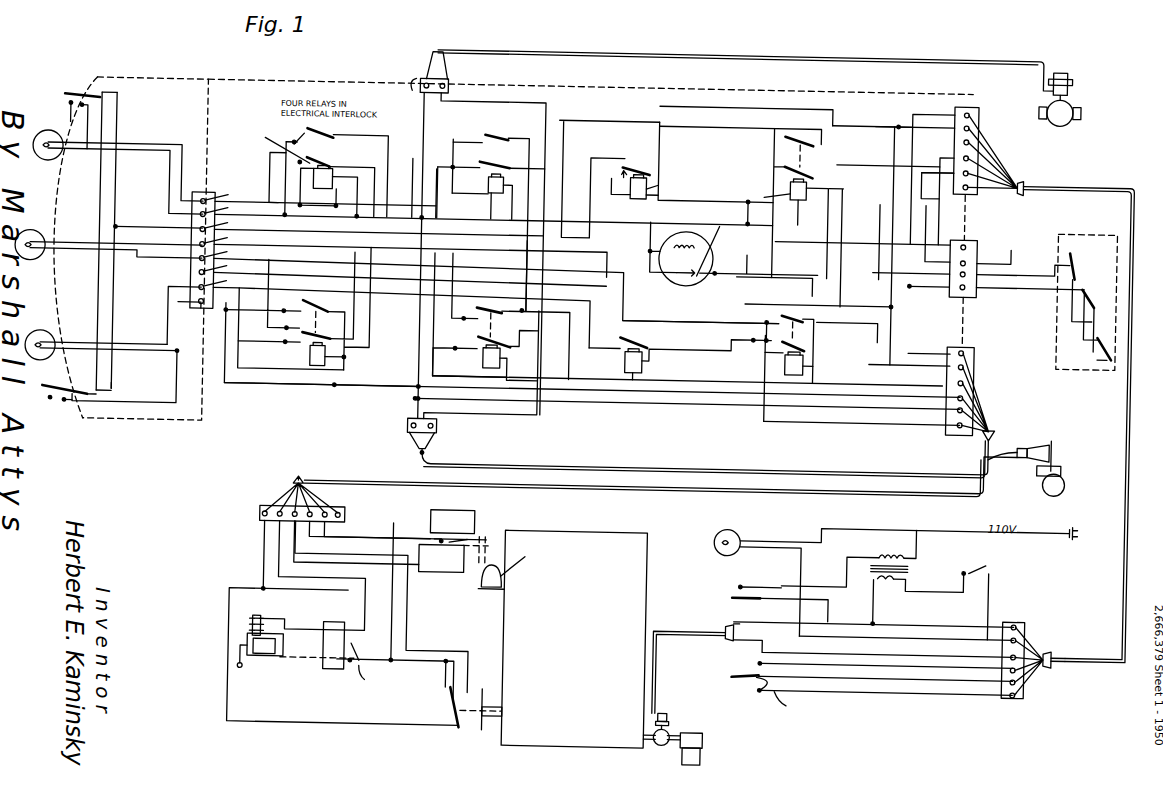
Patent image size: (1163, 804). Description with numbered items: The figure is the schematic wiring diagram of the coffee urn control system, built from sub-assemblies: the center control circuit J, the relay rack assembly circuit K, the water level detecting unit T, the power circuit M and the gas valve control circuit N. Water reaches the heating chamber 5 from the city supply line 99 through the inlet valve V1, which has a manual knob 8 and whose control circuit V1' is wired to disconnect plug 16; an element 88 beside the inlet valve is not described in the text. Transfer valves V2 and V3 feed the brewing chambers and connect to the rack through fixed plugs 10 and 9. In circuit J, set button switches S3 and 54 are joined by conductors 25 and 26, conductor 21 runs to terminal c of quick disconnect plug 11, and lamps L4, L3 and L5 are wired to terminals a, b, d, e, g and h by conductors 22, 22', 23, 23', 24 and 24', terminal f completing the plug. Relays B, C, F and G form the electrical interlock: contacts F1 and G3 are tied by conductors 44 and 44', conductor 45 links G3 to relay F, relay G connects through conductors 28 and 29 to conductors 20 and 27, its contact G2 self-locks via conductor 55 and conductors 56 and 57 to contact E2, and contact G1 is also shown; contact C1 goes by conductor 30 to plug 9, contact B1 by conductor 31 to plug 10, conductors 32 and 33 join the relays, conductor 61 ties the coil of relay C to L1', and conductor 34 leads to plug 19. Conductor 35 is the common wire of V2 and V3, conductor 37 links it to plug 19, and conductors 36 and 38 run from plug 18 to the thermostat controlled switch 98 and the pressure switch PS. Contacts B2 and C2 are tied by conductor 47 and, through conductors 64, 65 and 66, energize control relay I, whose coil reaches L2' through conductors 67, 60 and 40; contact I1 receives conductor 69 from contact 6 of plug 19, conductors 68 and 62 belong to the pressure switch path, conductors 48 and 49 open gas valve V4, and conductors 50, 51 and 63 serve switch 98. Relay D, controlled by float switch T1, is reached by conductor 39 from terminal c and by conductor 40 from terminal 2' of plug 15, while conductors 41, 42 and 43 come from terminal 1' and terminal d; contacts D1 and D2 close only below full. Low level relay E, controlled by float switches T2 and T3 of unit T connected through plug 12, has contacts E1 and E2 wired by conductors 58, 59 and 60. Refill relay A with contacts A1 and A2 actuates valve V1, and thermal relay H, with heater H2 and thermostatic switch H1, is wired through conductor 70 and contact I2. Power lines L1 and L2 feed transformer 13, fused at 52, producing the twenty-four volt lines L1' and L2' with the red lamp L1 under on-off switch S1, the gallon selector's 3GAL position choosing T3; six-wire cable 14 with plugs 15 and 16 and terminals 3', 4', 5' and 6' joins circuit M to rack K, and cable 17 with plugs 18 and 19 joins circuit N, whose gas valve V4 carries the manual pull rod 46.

The water heating chamber 5 is at (572, 628).
The manual control knob 8 is at (668, 738).
The fixed disconnect plug 9 is at (421, 78).
The fixed disconnect plug 10 is at (417, 410).
The quick disconnect plug connection 11 is at (198, 186).
The quick disconnect plug connection 12 is at (978, 224).
The transformer 13 is at (780, 298).
The six wire cable 14 is at (1136, 398).
The disconnect plug 15 is at (972, 86).
The disconnect plug 16 is at (1016, 679).
The six wire cable 17 is at (688, 477).
The disconnect plug 18 is at (356, 506).
The disconnect plug 19 is at (972, 322).
The conductor 20 is at (270, 189).
The conductor 21 is at (156, 220).
The conductor 22 is at (126, 161).
The conductor 22' is at (125, 180).
The conductor 23 is at (116, 234).
The conductor 23' is at (116, 262).
The conductor 24 is at (103, 334).
The conductor 24' is at (120, 351).
The conductor 25 is at (120, 290).
The conductor 26 is at (105, 292).
The common conductor 27 is at (412, 190).
The conductor 28 is at (356, 172).
The conductor 29 is at (341, 192).
The conductor 30 is at (504, 112).
The conductor 31 is at (544, 340).
The conductor 32 is at (438, 158).
The conductor 33 is at (456, 341).
The conductor 34 is at (566, 372).
The conductor 35 is at (428, 111).
The conductor 36 is at (422, 612).
The conductor 37 is at (674, 390).
The conductor 38 is at (458, 576).
The conductor 39 is at (594, 200).
The conductor 40 is at (885, 102).
The conductor 41 is at (937, 188).
The conductor 42 is at (786, 228).
The conductor 43 is at (622, 256).
The conductor 44 is at (323, 333).
The conductor 44' is at (259, 169).
The conductor 45 is at (354, 338).
The manual pull rod 46 is at (254, 640).
The conductor 47 is at (740, 368).
The conductor 48 is at (883, 325).
The conductor 49 is at (738, 317).
The conductor 50 is at (369, 632).
The conductor 51 is at (420, 658).
The fuse 52 is at (988, 550).
The manually operated switch 54 is at (100, 90).
The conductor 55 is at (274, 163).
The conductor 56 is at (413, 163).
The conductor 57 is at (522, 290).
The conductor 58 is at (688, 335).
The conductor 59 is at (874, 281).
The conductor 60 is at (894, 168).
The conductor 61 is at (556, 177).
The conductor 62 is at (384, 518).
The conductor 63 is at (270, 548).
The conductor 64 is at (462, 174).
The conductor 65 is at (532, 128).
The conductor 66 is at (574, 294).
The conductor 67 is at (842, 354).
The conductor 68 is at (428, 519).
The conductor 69 is at (848, 412).
The conductor 70 is at (794, 208).
The water inlet valve 88 is at (720, 748).
The thermostat controlled switch 98 is at (462, 698).
The city water supply line 99 is at (726, 722).
The terminal a is at (325, 202).
The terminal b is at (494, 219).
The terminal c is at (378, 232).
The terminal d is at (411, 257).
The terminal e is at (496, 287).
The terminal f is at (409, 275).
The terminal g is at (401, 327).
The terminal h is at (208, 300).
The refill relay A is at (814, 162).
The contact of refill relay A1 is at (775, 158).
The contact of refill relay A2 is at (775, 132).
The relay B is at (508, 348).
The contact of relay B B1 is at (488, 335).
The contact of relay B B2 is at (486, 300).
The relay C is at (492, 184).
The contact of relay C C1 is at (481, 158).
The contact of relay C C2 is at (489, 131).
The relay D is at (628, 186).
The contact of relay D D1 is at (630, 148).
The contact of relay D D2 is at (622, 164).
The low level relay E is at (632, 350).
The contact of relay E E1 is at (624, 331).
The contact of relay E E2 is at (636, 327).
The relay F is at (316, 350).
The contact of relay F F1 is at (330, 316).
The relay G is at (338, 165).
The contact of relay G G1 is at (270, 134).
The contact of relay G G2 is at (308, 120).
The contact of relay G G3 is at (325, 152).
The thermal relay H is at (665, 266).
The thermostatic switch H1 is at (716, 232).
The heating element H2 is at (688, 220).
The control relay I is at (814, 352).
The contact of relay I I1 is at (780, 338).
The contact of relay I I2 is at (796, 329).
The center control circuit J is at (187, 72).
The relay rack assembly circuit K is at (513, 84).
The power circuit M is at (898, 676).
The gas valve control circuit N is at (218, 570).
The fluid level responsive unit T is at (1120, 218).
The full level switch T1 is at (1068, 254).
The float controlled switch T2 is at (1076, 276).
The float controlled switch T3 is at (1078, 321).
The power line L1 is at (894, 576).
The power line L2 is at (920, 544).
The indicating light L3 is at (42, 226).
The indicating light L4 is at (58, 132).
The indicating light L5 is at (54, 326).
The twenty-four volt line L1' is at (645, 352).
The twenty-four volt line L2' is at (655, 372).
The terminal 1' is at (879, 362).
The terminal 2' is at (911, 377).
The terminal 3' is at (882, 394).
The terminal 4' is at (895, 409).
The terminal 5' is at (886, 420).
The terminal 6' is at (889, 444).
The terminal 6 is at (343, 501).
The pressure switch PS is at (496, 540).
The on-off switch S1 is at (766, 584).
The manually operated switch S3 is at (60, 394).
The shut-off valve V1 is at (688, 702).
The electrical control circuit V1' is at (710, 625).
The electrically operated valve V2 is at (1080, 448).
The electrically operated valve V3 is at (1072, 102).
The gas valve V4 is at (292, 660).
The selector switch position 3GAL is at (721, 663).